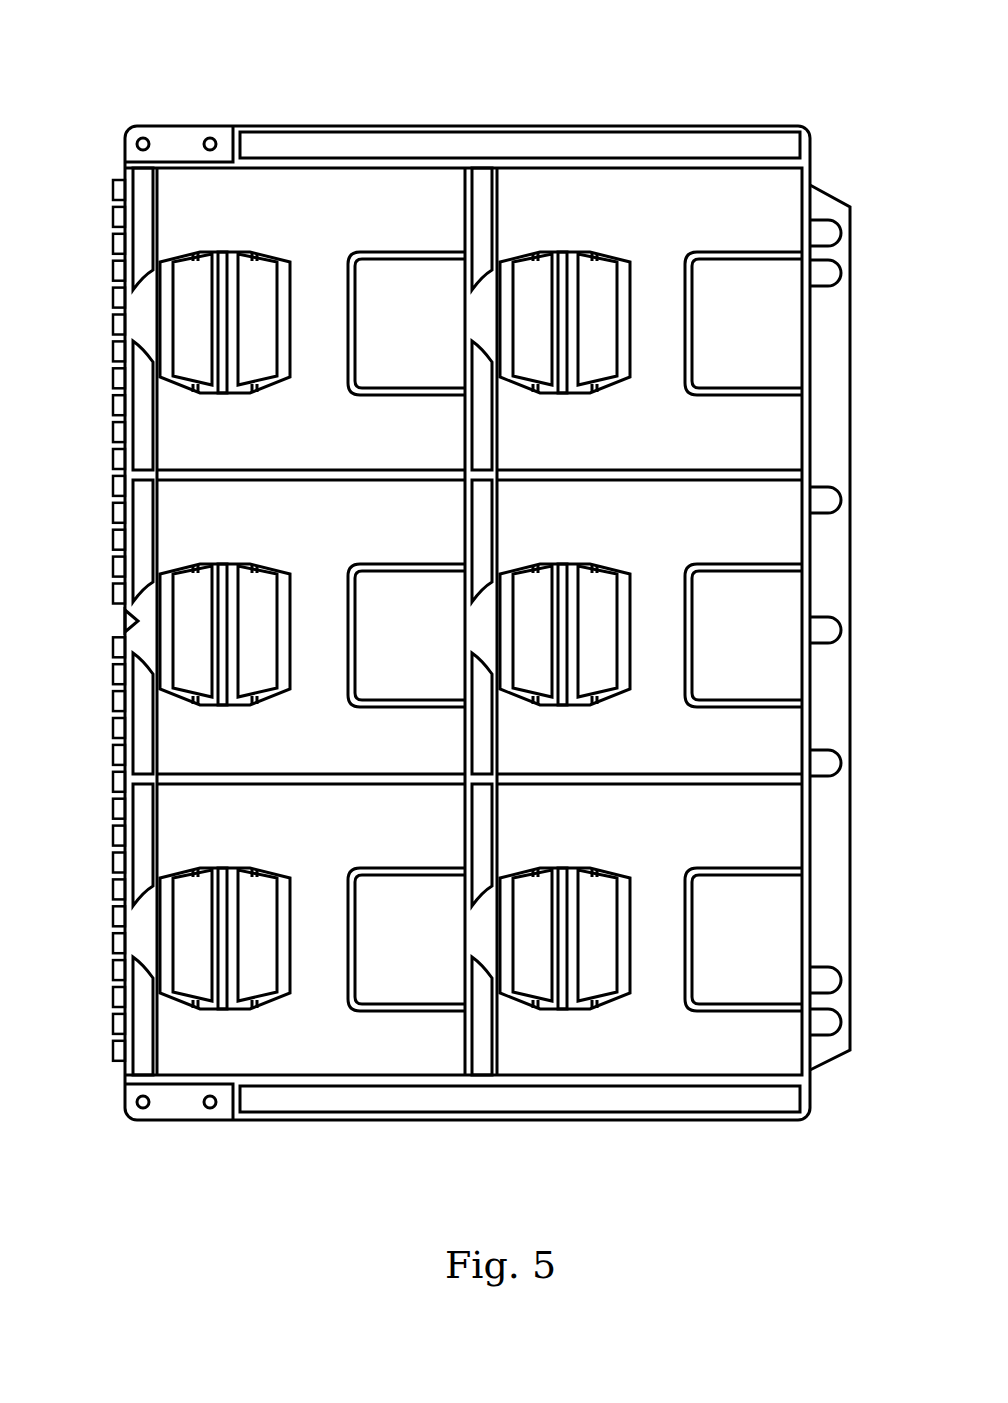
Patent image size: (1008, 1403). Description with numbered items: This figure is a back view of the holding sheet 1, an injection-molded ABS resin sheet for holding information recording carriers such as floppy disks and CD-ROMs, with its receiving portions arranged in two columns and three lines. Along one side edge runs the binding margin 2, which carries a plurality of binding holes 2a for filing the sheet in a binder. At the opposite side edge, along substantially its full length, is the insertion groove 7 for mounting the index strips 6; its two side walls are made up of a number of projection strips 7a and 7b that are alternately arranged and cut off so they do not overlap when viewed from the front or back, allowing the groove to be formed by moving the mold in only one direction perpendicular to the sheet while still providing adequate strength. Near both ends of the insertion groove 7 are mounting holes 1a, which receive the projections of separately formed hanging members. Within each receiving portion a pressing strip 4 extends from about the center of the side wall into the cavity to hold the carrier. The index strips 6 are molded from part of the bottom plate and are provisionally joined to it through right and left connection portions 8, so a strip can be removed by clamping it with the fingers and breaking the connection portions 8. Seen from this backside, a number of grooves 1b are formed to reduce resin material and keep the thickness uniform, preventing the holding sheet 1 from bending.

The holding sheet 1 is at (384, 104).
The mounting holes 1a is at (208, 136).
The grooves 1b is at (577, 126).
The binding margin 2 is at (851, 398).
The binding holes 2a is at (830, 233).
The pressing strip 4 is at (400, 290).
The index strips 6 is at (262, 283).
The insertion groove 7 is at (112, 565).
The projection strips 7a is at (112, 355).
The projection strips 7b is at (112, 297).
The connection portions 8 is at (270, 394).